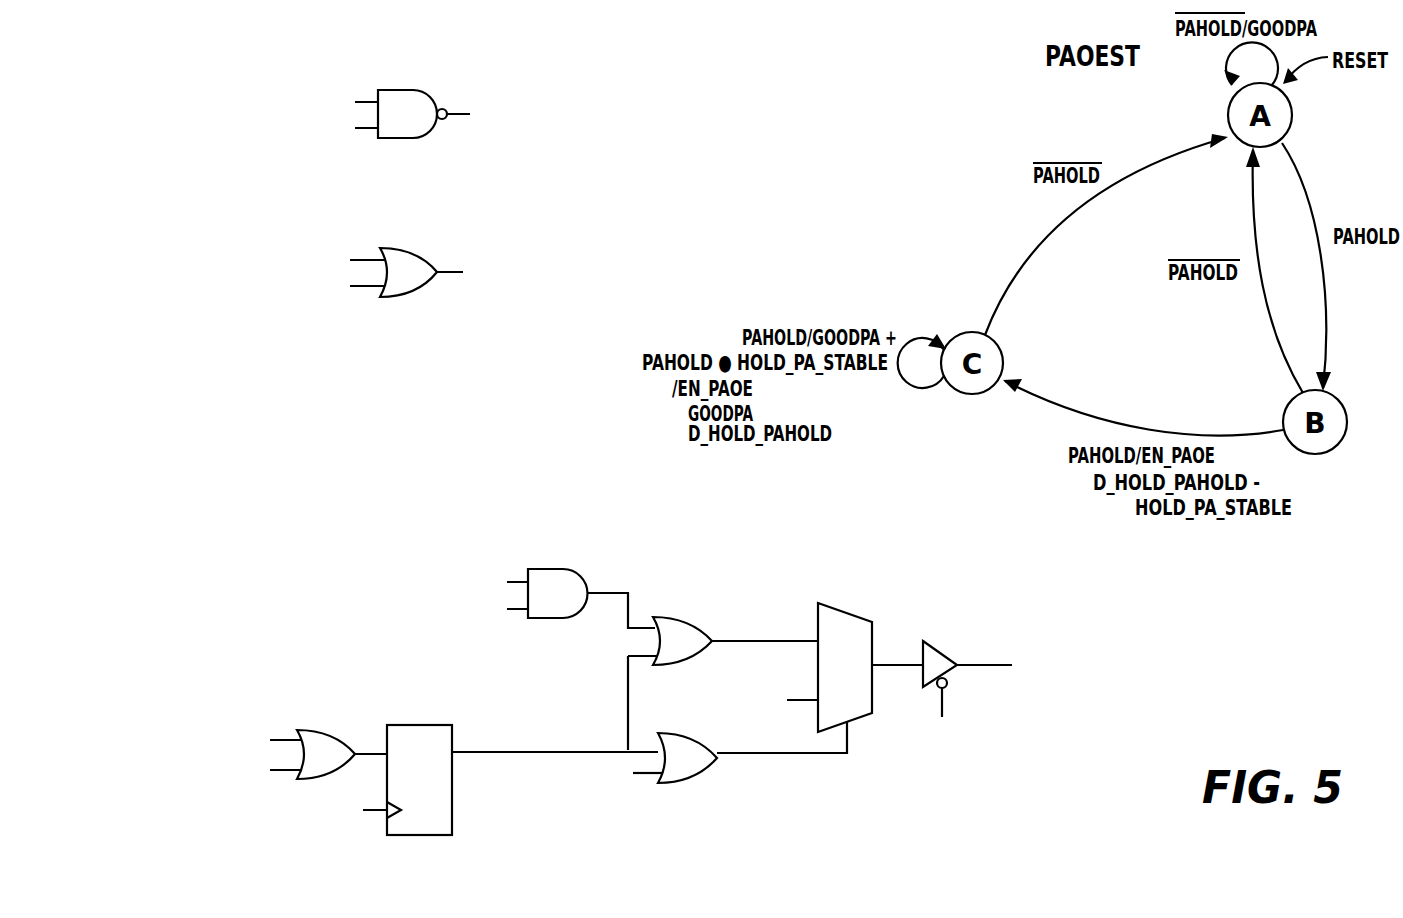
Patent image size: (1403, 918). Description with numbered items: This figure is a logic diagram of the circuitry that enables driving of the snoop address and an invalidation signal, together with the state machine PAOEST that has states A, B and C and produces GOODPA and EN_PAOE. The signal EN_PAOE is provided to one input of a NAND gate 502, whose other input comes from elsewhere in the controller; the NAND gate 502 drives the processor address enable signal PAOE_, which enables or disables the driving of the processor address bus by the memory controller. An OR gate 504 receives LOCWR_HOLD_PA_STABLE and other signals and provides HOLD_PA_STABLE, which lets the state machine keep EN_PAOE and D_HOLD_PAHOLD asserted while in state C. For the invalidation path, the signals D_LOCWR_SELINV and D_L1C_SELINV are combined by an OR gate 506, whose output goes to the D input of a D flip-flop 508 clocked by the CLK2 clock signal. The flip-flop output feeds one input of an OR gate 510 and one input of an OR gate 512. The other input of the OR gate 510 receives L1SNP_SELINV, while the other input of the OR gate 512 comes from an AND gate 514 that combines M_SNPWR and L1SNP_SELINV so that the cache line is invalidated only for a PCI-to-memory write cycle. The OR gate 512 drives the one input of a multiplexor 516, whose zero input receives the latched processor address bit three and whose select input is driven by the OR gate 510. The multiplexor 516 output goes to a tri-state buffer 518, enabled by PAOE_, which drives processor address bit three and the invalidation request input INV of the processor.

The NAND gate 502 is at (396, 97).
The OR gate 504 is at (366, 255).
The OR gate 506 is at (247, 736).
The D flip-flop 508 is at (487, 758).
The OR gate 510 is at (626, 775).
The OR gate 512 is at (723, 666).
The AND gate 514 is at (513, 580).
The multiplexor 516 is at (814, 670).
The tri-state buffer 518 is at (1002, 680).